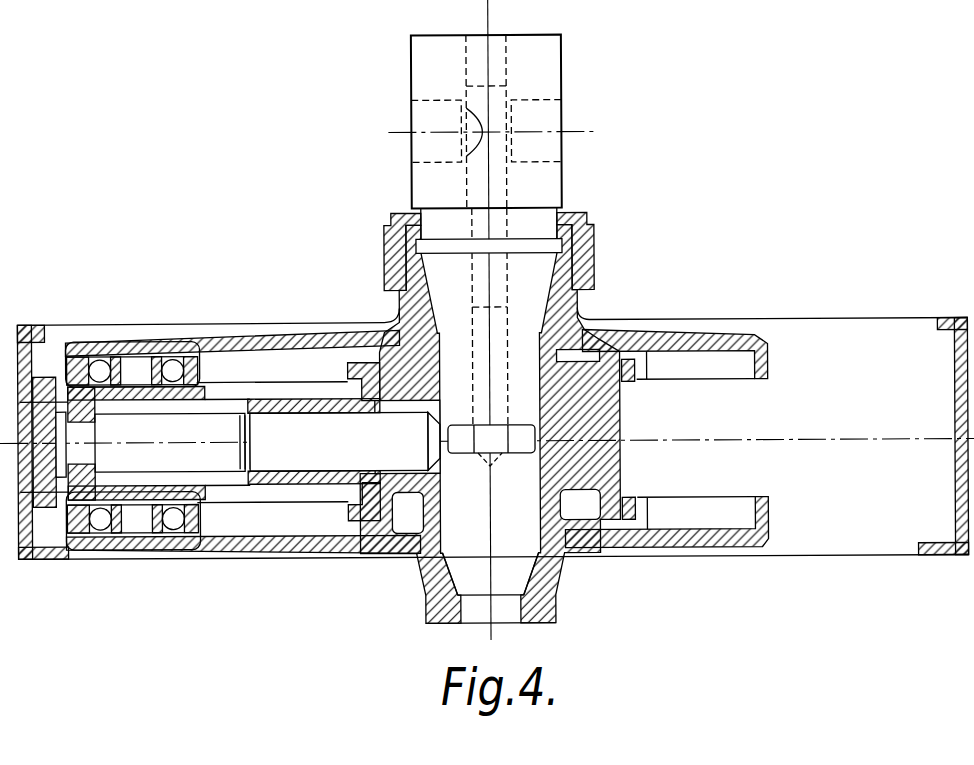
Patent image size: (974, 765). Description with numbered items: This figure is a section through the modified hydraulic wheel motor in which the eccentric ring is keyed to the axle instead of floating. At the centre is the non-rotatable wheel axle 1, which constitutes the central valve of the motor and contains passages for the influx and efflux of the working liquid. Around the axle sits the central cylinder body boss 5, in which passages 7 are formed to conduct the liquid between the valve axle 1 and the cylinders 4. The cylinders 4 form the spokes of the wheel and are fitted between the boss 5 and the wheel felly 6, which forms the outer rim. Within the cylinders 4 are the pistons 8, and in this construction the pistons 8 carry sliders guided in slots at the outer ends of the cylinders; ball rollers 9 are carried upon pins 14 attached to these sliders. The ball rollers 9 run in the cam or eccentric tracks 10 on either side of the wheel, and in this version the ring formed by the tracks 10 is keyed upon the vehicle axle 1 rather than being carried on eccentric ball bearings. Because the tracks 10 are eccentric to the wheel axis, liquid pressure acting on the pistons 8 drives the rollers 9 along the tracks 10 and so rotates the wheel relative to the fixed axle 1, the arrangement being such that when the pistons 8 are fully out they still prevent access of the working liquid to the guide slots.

The wheel axle 1 is at (497, 415).
The cylinders 4 is at (292, 400).
The central cylinder body boss 5 is at (387, 358).
The wheel felly 6 is at (26, 345).
The passages 7 is at (445, 430).
The pistons 8 is at (268, 449).
The ball rollers 9 is at (67, 365).
The cam or eccentric tracks 10 is at (762, 521).
The pins 14 is at (132, 446).